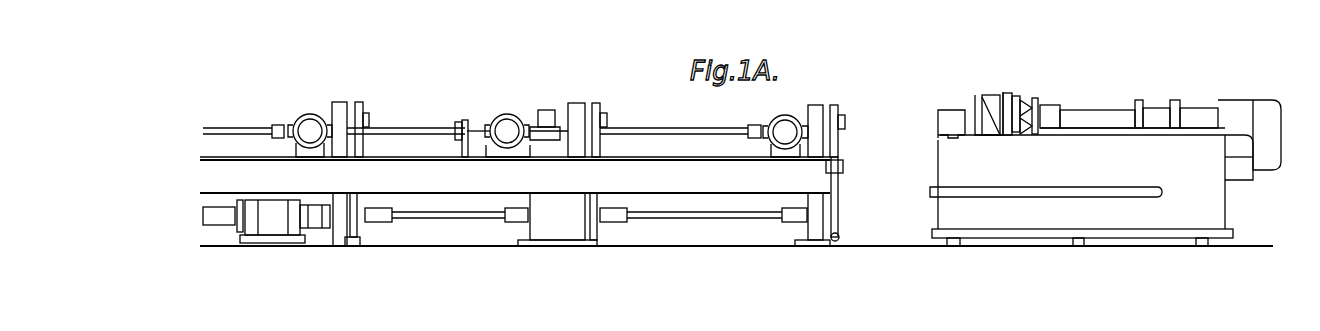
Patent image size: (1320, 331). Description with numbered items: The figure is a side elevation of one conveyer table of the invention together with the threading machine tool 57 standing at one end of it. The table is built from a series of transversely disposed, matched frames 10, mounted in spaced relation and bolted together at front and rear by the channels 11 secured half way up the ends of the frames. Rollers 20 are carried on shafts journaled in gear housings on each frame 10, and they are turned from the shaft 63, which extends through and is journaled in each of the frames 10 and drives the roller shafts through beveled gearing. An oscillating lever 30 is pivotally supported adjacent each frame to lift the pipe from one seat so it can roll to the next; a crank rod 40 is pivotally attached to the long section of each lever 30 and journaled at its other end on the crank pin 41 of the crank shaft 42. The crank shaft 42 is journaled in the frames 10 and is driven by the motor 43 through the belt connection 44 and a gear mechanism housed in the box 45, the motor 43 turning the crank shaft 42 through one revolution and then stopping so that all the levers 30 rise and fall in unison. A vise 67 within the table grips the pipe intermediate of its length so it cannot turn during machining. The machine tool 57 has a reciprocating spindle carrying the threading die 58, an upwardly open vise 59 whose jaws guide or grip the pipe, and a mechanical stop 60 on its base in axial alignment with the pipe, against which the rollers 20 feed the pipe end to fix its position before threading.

The frame 10 is at (340, 118).
The channel 11 is at (400, 172).
The roller 20 is at (313, 113).
The oscillating lever 30 is at (369, 117).
The crank rod 40 is at (840, 214).
The crank pin 41 is at (370, 235).
The crank shaft 42 is at (455, 225).
The motor 43 is at (275, 230).
The belt connection 44 is at (242, 232).
The box 45 is at (290, 198).
The machine tool 57 is at (1105, 173).
The threading die 58 is at (1006, 95).
The vise 59 is at (950, 110).
The mechanical stop 60 is at (985, 100).
The shaft 63 is at (215, 130).
The vise 67 is at (547, 108).